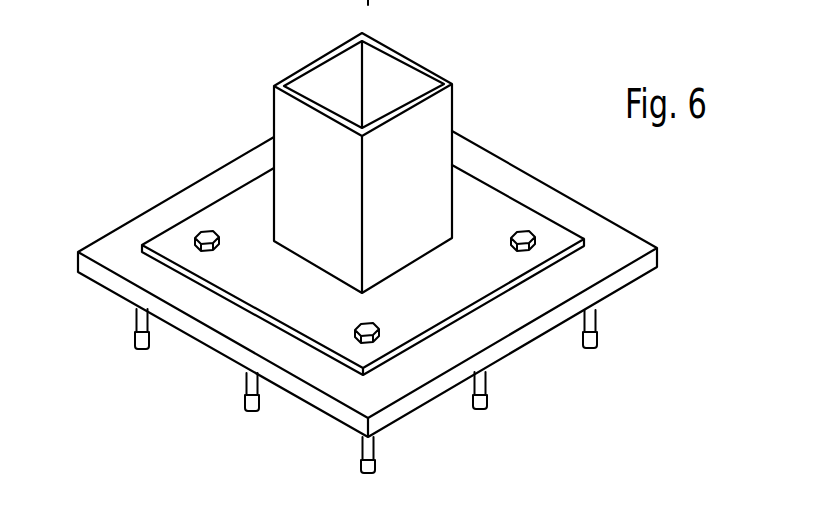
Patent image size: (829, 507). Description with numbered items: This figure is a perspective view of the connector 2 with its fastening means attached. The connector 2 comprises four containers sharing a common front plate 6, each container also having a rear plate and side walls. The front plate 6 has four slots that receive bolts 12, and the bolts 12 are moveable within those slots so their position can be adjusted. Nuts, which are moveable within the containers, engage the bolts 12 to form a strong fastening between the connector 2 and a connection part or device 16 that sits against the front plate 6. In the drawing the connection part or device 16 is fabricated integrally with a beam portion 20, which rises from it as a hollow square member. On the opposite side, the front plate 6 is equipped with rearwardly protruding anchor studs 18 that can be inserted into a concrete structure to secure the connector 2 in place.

The connector 2 is at (708, 205).
The front plate 6 is at (110, 254).
The bolts 12 is at (203, 231).
The connection part or device 16 is at (167, 243).
The anchor studs 18 is at (142, 350).
The beam portion 20 is at (307, 63).